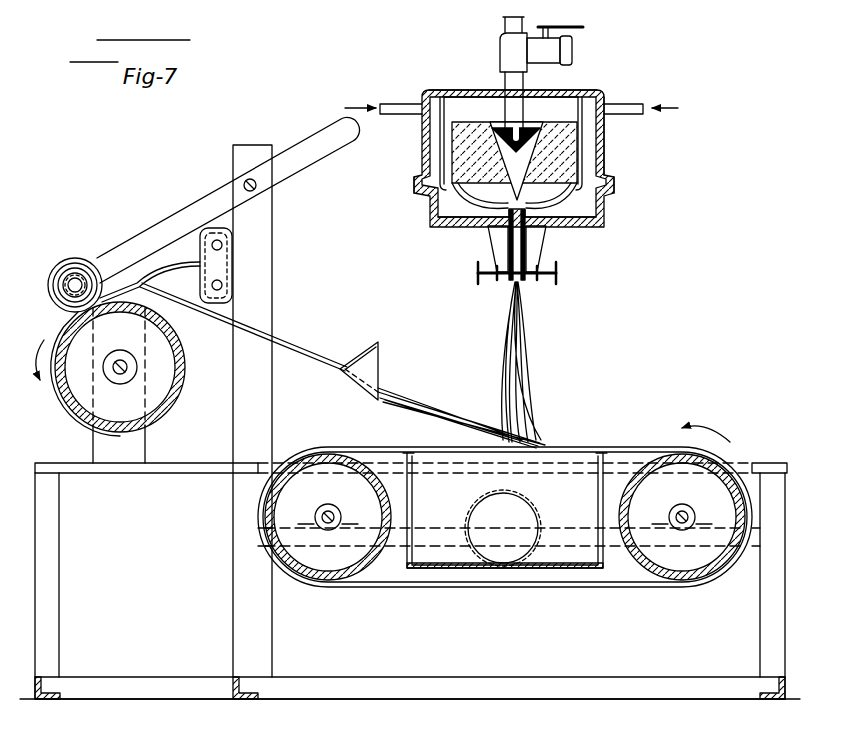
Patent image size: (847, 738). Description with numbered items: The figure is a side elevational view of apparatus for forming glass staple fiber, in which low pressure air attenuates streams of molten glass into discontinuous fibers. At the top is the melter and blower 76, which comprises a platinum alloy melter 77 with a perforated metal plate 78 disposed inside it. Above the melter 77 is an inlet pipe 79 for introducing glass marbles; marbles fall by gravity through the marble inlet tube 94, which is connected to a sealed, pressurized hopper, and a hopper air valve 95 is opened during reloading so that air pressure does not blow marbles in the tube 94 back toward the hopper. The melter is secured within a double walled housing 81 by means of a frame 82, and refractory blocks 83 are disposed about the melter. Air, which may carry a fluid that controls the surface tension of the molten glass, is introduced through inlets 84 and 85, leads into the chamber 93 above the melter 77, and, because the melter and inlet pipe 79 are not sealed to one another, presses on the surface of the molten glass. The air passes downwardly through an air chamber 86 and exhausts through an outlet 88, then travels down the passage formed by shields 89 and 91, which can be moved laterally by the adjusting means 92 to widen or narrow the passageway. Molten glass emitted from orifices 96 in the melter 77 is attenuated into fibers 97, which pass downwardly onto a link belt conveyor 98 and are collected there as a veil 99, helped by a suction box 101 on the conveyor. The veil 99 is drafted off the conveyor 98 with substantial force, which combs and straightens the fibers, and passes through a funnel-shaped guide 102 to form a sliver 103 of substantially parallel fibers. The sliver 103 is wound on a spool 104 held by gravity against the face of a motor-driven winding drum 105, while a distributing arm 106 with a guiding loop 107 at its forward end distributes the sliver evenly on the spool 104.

The melter and blower 76 is at (424, 90).
The platinum alloy melter 77 is at (537, 185).
The perforated metal plate 78 is at (523, 148).
The inlet pipe 79 is at (497, 115).
The double walled housing 81 is at (600, 92).
The frame 82 is at (476, 123).
The refractory blocks 83 is at (470, 187).
The inlet 84 is at (643, 97).
The inlet 85 is at (383, 95).
The air chamber 86 is at (598, 137).
The outlet 88 is at (521, 226).
The shield 89 is at (482, 262).
The shield 91 is at (529, 262).
The adjusting means 92 is at (477, 275).
The chamber 93 is at (542, 108).
The marble inlet tube 94 is at (503, 27).
The hopper air valve 95 is at (556, 48).
The orifices 96 is at (483, 207).
The fibers 97 is at (506, 348).
The link belt conveyor 98 is at (552, 587).
The veil 99 is at (440, 444).
The suction box 101 is at (453, 570).
The funnel-shaped guide 102 is at (380, 364).
The sliver 103 is at (302, 345).
The spool 104 is at (72, 272).
The winding drum 105 is at (170, 396).
The distributing arm 106 is at (173, 262).
The guiding loop 107 is at (140, 280).